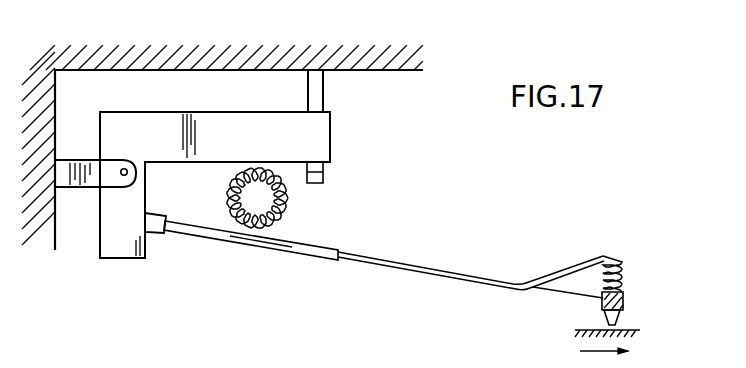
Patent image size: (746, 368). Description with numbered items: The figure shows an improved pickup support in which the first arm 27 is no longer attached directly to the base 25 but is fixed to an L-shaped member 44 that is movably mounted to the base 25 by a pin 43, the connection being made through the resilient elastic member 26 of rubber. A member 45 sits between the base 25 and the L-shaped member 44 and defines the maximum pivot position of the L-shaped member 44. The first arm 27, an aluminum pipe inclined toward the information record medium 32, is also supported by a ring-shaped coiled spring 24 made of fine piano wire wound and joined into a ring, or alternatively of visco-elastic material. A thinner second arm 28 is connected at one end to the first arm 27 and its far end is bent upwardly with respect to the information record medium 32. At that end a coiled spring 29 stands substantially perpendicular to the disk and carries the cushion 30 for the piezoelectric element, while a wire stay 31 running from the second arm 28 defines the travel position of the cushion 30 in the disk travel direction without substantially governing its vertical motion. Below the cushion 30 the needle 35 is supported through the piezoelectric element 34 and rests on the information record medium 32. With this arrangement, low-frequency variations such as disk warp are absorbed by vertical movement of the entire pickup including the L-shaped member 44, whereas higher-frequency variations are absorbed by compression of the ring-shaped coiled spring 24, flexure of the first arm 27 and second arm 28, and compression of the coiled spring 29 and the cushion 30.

The ring-shaped coiled spring 24 is at (287, 192).
The base 25 is at (313, 62).
The elastic member 26 is at (160, 228).
The first arm 27 is at (288, 247).
The second arm 28 is at (470, 278).
The coiled spring 29 is at (625, 270).
The cushion for the piezoelectric element 30 is at (625, 296).
The stay 31 is at (568, 297).
The information record medium 32 is at (630, 335).
The piezoelectric element 34 is at (617, 318).
The needle 35 is at (621, 357).
The pin 43 is at (126, 168).
The L-shaped member 44 is at (272, 125).
The member defining maximum pivot position 45 is at (319, 89).